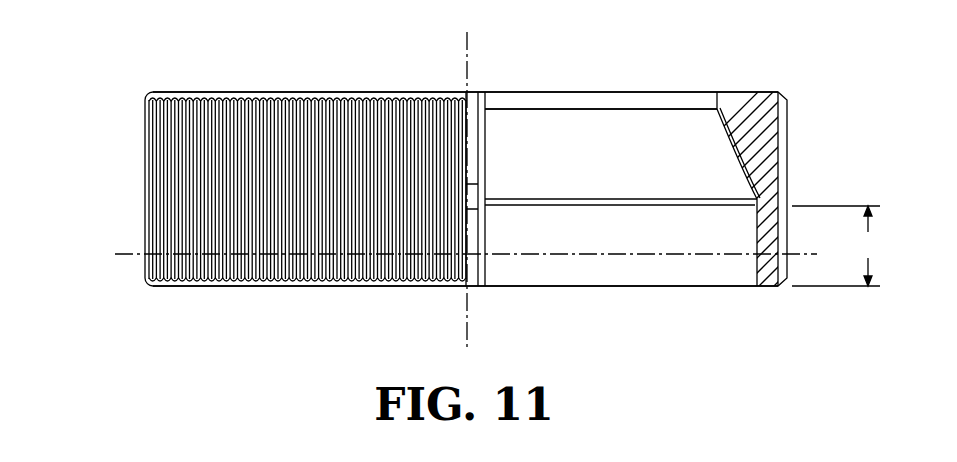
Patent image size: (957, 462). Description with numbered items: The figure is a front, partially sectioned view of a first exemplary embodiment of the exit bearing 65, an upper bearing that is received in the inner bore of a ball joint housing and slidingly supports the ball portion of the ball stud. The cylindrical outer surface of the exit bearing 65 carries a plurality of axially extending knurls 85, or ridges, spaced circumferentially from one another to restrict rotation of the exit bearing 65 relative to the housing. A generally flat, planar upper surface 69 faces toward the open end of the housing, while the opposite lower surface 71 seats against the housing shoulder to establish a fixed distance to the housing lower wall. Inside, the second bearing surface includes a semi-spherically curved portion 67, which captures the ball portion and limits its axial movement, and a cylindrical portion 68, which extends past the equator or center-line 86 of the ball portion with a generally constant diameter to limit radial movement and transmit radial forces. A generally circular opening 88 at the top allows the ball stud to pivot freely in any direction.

The exit bearing 65 is at (143, 197).
The knurls 85 is at (207, 140).
The upper surface 69 is at (317, 92).
The lower surface 71 is at (303, 288).
The center-line 86 is at (125, 256).
The semi-spherically curved portion 67 is at (540, 132).
The opening 88 is at (677, 102).
The cylindrical portion 68 is at (837, 246).